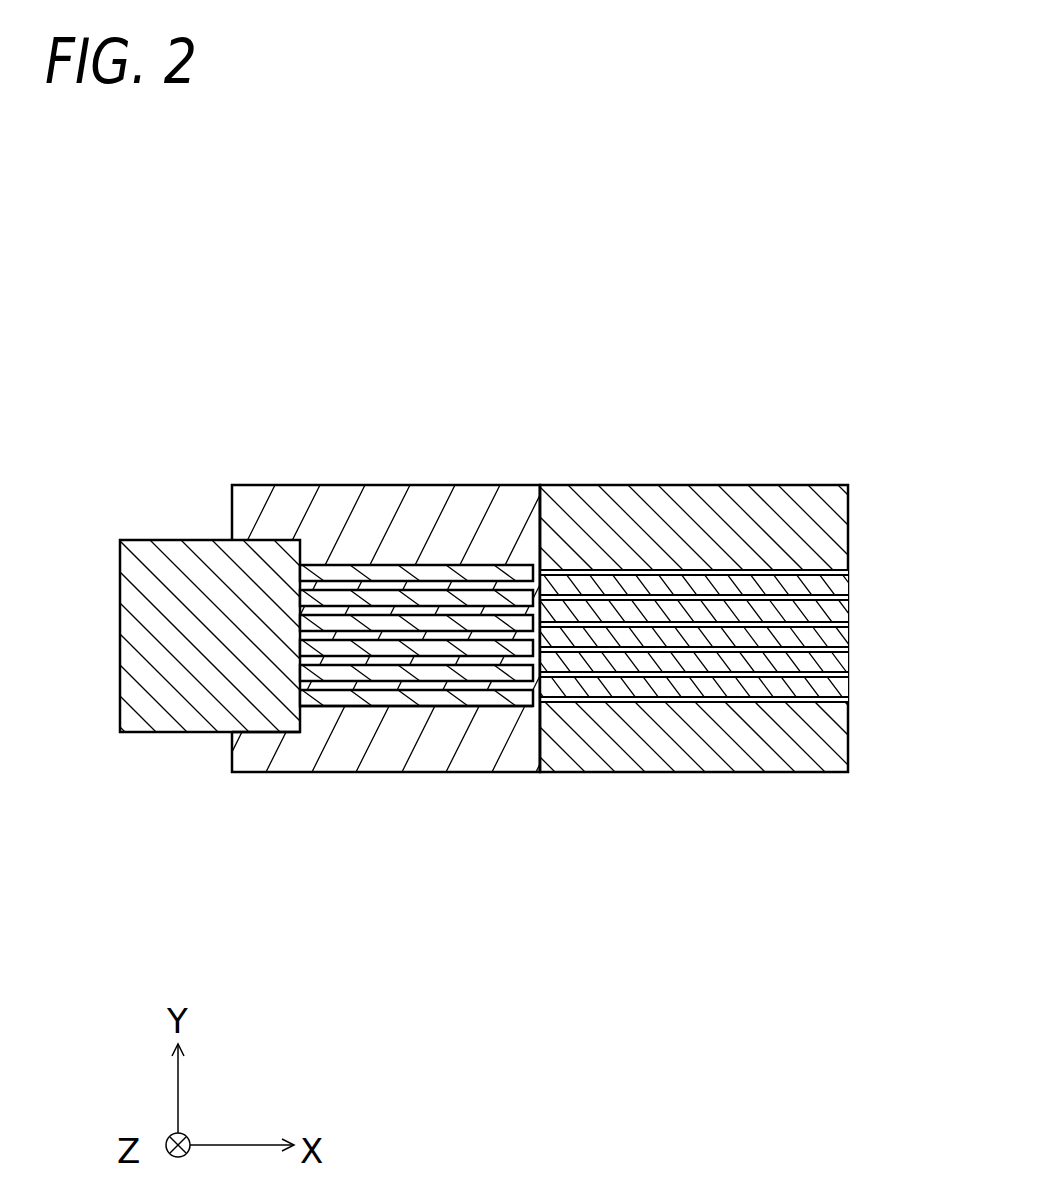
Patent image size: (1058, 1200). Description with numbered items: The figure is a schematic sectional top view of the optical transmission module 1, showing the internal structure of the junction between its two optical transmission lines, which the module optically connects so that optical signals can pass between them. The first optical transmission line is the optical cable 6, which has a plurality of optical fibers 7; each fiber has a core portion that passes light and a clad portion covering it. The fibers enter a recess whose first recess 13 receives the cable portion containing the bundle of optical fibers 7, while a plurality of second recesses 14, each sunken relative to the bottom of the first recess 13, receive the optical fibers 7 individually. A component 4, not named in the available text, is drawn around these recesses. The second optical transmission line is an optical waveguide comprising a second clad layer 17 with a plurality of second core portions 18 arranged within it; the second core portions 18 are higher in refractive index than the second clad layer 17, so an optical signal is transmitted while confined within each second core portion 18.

The optical transmission module 1 is at (243, 329).
The cladding 4 is at (453, 535).
The optical cable 6 is at (152, 588).
The optical fiber 7 is at (343, 570).
The second clad layer 17 is at (743, 547).
The second core portion 18 is at (643, 570).
The first recess 13 is at (270, 733).
The second recess 14 is at (409, 706).